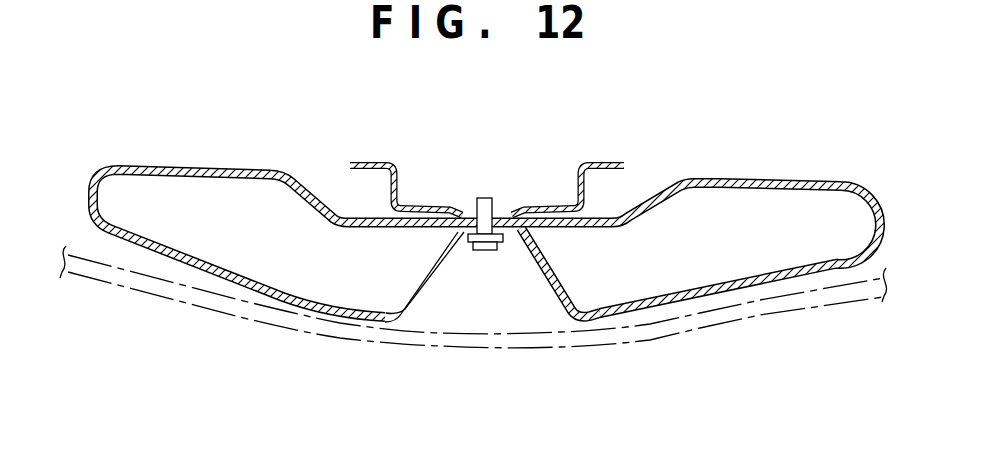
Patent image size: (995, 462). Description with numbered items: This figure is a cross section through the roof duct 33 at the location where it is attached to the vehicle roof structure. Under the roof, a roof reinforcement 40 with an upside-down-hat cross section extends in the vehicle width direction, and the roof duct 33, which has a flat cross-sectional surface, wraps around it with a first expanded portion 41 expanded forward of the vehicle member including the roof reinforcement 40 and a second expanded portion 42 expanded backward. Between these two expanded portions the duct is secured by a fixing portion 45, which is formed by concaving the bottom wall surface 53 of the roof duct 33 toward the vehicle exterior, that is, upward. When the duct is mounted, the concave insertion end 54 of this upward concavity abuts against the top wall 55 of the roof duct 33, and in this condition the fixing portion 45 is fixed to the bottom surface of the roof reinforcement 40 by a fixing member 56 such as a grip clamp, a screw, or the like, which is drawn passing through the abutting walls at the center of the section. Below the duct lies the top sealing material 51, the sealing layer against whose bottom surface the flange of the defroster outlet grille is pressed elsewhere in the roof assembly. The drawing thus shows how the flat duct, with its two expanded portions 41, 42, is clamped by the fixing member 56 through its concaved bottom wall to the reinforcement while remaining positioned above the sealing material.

The roof duct 33 is at (307, 170).
The roof reinforcement 40 is at (410, 203).
The first expanded portion 41 is at (200, 166).
The second expanded portion 42 is at (726, 177).
The fixing portion 45 is at (533, 303).
The top sealing material 51 is at (703, 328).
The bottom wall surface 53 is at (634, 322).
The concave insertion end 54 is at (460, 240).
The top wall 55 is at (601, 212).
The bolt 56 is at (486, 196).